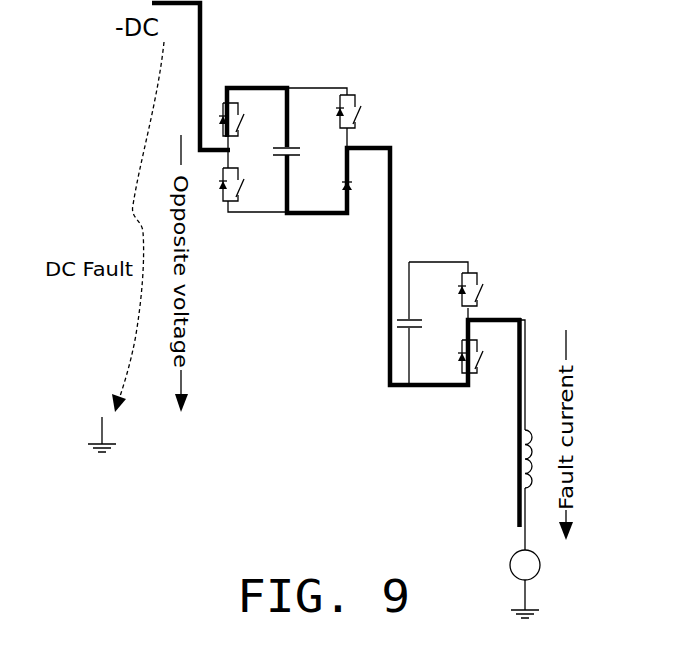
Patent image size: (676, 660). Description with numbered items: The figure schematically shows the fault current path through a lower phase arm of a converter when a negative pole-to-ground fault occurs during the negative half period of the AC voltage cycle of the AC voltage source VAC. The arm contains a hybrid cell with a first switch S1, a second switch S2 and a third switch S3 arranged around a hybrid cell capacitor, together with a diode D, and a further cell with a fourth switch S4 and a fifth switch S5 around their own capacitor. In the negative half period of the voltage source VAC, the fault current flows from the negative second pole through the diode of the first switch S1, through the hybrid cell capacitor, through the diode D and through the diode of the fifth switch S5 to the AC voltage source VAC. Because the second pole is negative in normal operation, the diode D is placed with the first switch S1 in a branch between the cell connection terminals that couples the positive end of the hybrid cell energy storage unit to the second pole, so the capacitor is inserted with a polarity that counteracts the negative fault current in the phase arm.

The first switch S1 is at (245, 119).
The second switch S2 is at (245, 184).
The third switch S3 is at (367, 111).
The fourth switch S4 is at (484, 289).
The fifth switch S5 is at (483, 356).
The diode D is at (357, 190).
The AC voltage source VAC is at (553, 565).